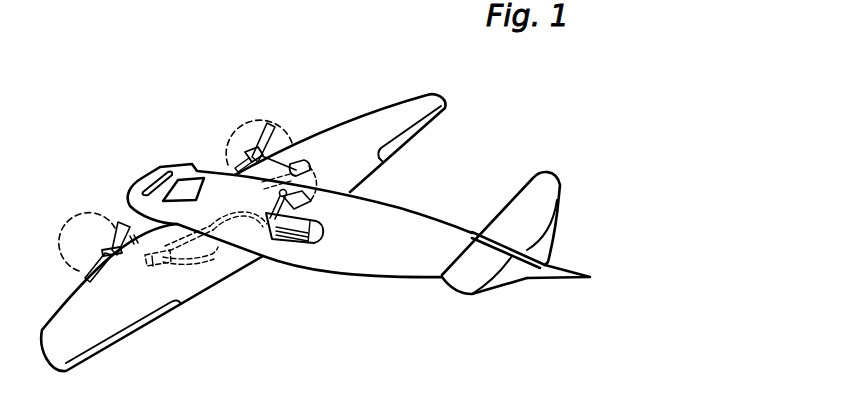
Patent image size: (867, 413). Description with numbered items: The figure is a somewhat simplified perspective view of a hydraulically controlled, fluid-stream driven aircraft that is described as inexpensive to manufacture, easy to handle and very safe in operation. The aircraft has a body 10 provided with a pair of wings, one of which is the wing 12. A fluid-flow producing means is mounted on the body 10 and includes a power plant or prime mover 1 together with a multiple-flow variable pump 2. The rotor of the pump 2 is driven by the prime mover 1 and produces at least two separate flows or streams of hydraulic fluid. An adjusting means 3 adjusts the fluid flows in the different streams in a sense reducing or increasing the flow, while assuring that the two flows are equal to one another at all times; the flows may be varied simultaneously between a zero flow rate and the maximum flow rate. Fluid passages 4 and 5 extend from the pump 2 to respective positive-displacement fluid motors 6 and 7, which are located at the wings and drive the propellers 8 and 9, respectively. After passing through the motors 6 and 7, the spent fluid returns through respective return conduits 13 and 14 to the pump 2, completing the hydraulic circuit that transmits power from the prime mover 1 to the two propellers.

The prime mover 1 is at (320, 233).
The multiple-flow variable pump 2 is at (276, 238).
The adjusting means 3 is at (312, 204).
The fluid passage 4 is at (221, 213).
The fluid passage 5 is at (265, 183).
The positive-displacement fluid motor 6 is at (143, 263).
The positive-displacement fluid motor 7 is at (295, 162).
The propeller 8 is at (115, 227).
The propeller 9 is at (272, 124).
The body 10 is at (378, 268).
The wing 12 is at (374, 128).
The return conduit 13 is at (211, 259).
The return conduit 14 is at (321, 181).